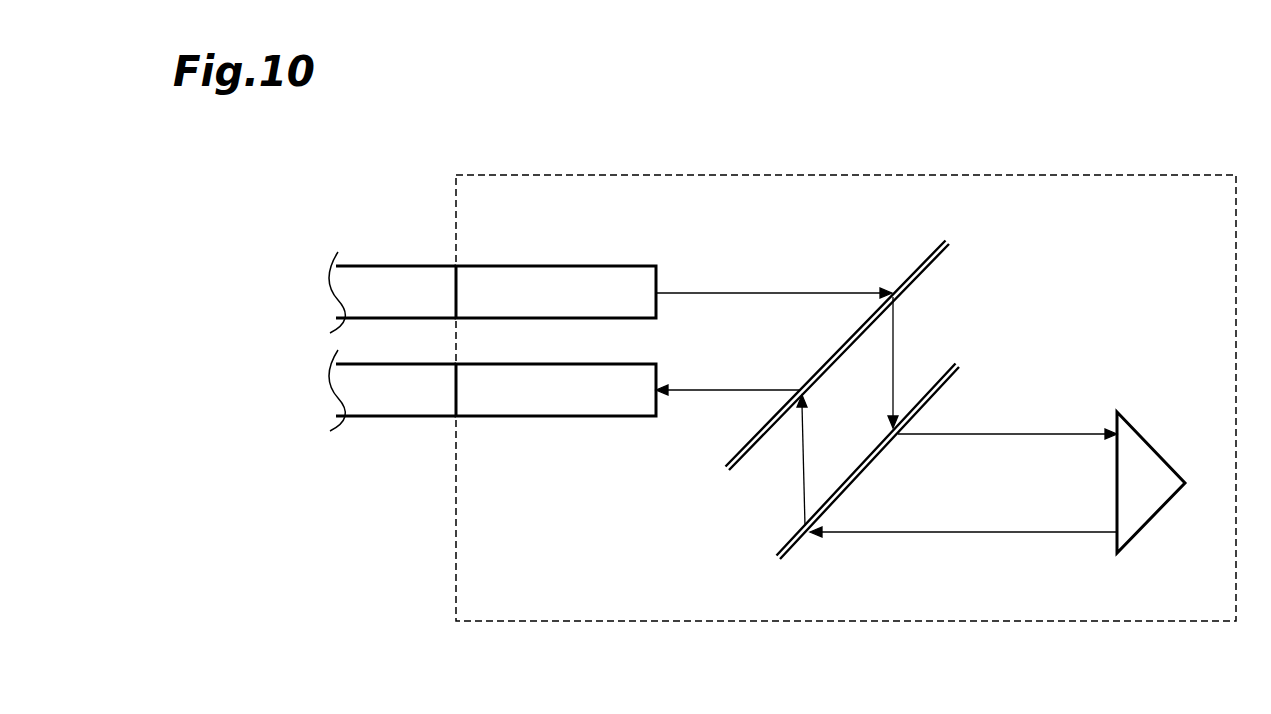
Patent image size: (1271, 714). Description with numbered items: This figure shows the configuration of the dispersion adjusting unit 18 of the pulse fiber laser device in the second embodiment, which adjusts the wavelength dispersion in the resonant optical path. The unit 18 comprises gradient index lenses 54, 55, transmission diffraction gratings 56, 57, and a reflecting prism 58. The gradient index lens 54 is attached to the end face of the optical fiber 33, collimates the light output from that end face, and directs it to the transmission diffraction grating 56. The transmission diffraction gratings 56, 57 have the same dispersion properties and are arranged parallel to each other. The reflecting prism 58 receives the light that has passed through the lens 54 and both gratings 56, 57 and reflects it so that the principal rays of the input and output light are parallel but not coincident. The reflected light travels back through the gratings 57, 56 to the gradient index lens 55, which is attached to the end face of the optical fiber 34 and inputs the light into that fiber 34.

The dispersion adjusting unit 18 is at (495, 621).
The optical fiber 33 is at (388, 287).
The optical fiber 34 is at (387, 398).
The gradient index lens 54 is at (630, 278).
The gradient index lens 55 is at (603, 400).
The transmission diffraction grating 56 is at (743, 463).
The transmission diffraction grating 57 is at (790, 538).
The reflecting prism 58 is at (1152, 447).